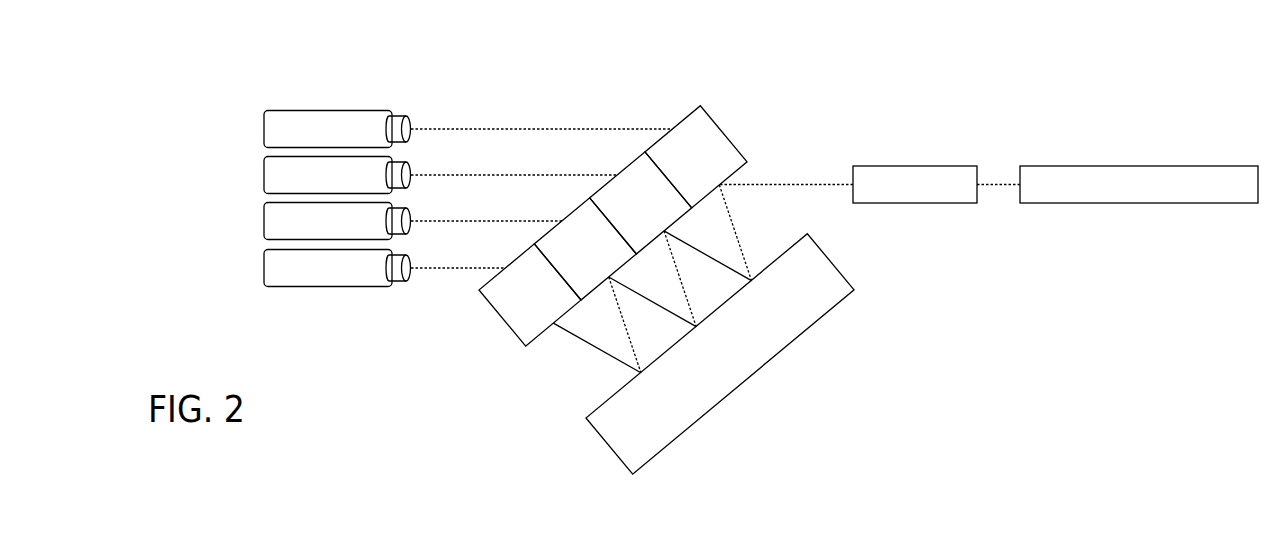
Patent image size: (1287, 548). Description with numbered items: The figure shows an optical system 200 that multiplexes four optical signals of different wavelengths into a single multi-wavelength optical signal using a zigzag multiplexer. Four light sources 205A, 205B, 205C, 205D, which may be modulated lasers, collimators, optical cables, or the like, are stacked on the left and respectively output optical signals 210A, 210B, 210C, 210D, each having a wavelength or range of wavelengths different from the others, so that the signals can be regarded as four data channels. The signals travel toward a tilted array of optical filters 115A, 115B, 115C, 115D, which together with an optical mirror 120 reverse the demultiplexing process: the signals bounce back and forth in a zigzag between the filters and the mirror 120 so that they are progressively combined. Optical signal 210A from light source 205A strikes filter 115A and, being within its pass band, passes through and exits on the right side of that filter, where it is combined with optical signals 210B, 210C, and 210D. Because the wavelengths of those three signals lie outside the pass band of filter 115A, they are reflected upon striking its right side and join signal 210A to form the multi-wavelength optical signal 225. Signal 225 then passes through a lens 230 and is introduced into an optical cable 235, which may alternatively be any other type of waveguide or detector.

The optical system 200 is at (292, 83).
The light source 205A is at (302, 142).
The light source 205B is at (302, 188).
The light source 205C is at (302, 234).
The light source 205D is at (302, 281).
The optical signal 210A is at (425, 130).
The optical signal 210B is at (425, 176).
The optical signal 210C is at (425, 222).
The optical signal 210D is at (425, 269).
The optical filter 115A is at (670, 167).
The optical filter 115B is at (617, 215).
The optical filter 115C is at (561, 260).
The optical filter 115D is at (505, 305).
The optical mirror 120 is at (702, 363).
The multi-wavelength optical signal 225 is at (760, 182).
The lens 230 is at (968, 198).
The optical cable 235 is at (1250, 198).